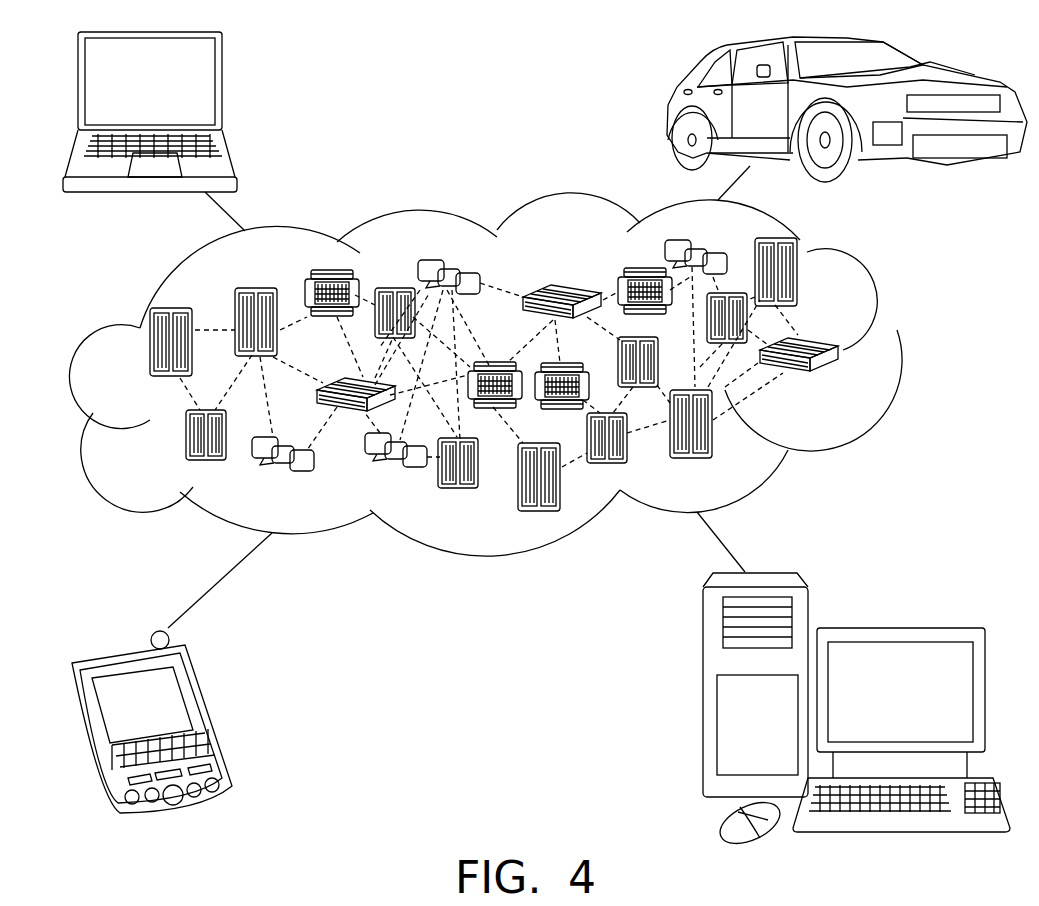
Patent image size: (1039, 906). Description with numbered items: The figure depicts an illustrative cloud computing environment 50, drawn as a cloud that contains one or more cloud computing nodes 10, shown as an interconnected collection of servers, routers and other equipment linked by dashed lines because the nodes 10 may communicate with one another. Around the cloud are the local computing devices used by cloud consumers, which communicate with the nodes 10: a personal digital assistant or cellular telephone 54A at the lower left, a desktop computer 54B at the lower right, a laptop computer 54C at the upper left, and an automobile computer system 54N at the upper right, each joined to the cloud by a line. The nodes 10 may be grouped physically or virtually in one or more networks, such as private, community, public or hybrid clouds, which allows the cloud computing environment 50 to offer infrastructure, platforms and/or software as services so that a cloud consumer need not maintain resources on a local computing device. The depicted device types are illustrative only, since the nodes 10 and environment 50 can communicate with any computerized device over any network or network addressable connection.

The cloud computing node 10 is at (858, 390).
The cloud computing environment 50 is at (513, 374).
The personal digital assistant or cellular telephone 54A is at (212, 723).
The desktop computer 54B is at (897, 627).
The laptop computer 54C is at (220, 92).
The automobile computer system 54N is at (677, 108).